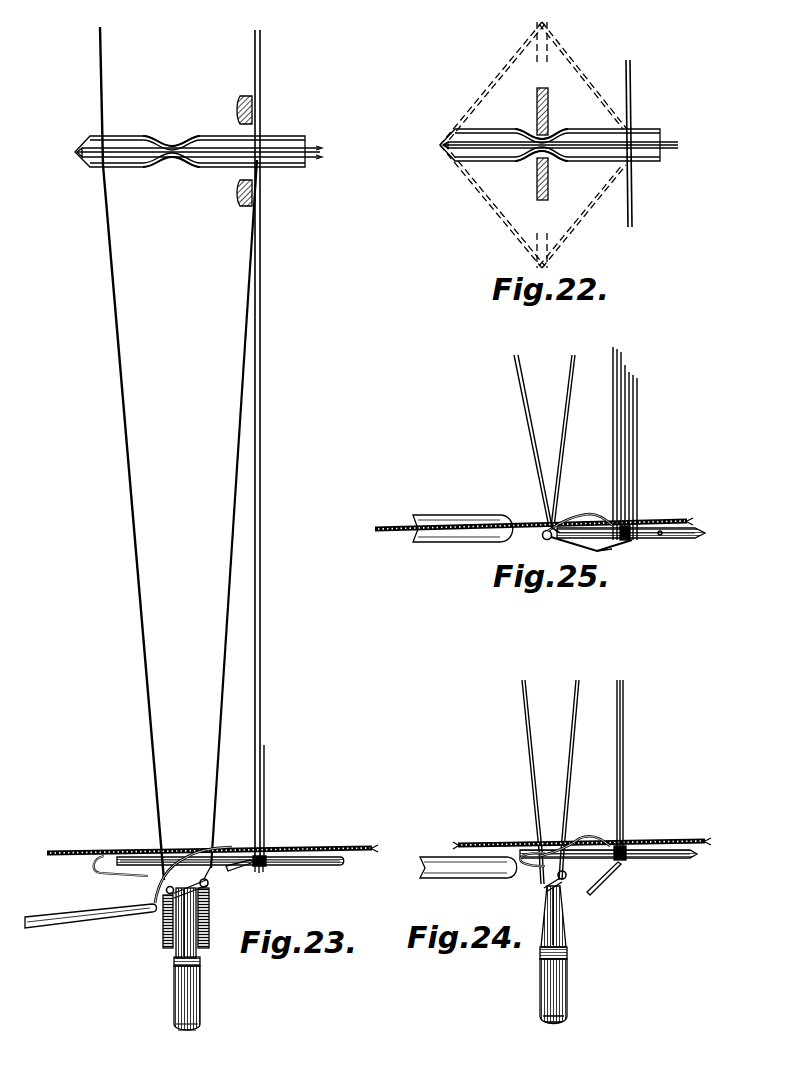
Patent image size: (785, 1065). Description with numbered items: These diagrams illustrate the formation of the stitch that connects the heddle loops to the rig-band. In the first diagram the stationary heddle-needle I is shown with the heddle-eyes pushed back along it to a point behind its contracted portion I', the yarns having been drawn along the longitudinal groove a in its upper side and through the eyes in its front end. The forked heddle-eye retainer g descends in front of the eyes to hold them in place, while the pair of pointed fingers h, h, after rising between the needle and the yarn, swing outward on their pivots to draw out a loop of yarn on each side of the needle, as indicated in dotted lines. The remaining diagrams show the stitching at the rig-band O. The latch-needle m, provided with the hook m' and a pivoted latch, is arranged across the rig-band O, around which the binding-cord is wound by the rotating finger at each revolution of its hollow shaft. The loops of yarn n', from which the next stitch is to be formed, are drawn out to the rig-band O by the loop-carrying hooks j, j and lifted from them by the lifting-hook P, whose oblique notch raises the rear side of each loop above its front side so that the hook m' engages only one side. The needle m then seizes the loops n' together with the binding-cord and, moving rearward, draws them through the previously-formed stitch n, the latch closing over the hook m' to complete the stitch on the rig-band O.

In FIG. 23, the stationary needle I is at (198, 143).
In FIG. 22, the stationary needle I is at (559, 135).
In FIG. 23, the contracted portion of needle I' is at (171, 156).
In FIG. 22, the contracted portion of needle I' is at (542, 143).
In FIG. 23, the longitudinal groove a is at (131, 158).
In FIG. 22, the longitudinal groove a is at (640, 146).
In FIG. 23, the heddle-eye retainer g is at (239, 151).
In FIG. 22, the pointed finger h is at (550, 144).
In FIG. 23, the rig-band O is at (212, 844).
In FIG. 25, the rig-band O is at (534, 519).
In FIG. 24, the rig-band O is at (582, 838).
In FIG. 23, the latch-needle m is at (230, 868).
In FIG. 25, the latch-needle m is at (631, 450).
In FIG. 24, the latch-needle m is at (608, 777).
In FIG. 23, the hook m' is at (121, 871).
In FIG. 25, the hook m' is at (585, 547).
In FIG. 24, the hook m' is at (531, 870).
In FIG. 23, the previously-formed stitch n is at (259, 870).
In FIG. 25, the previously-formed stitch n is at (625, 541).
In FIG. 24, the previously-formed stitch n is at (621, 861).
In FIG. 23, the loops of yarn n' is at (196, 882).
In FIG. 25, the loops of yarn n' is at (561, 517).
In FIG. 24, the loops of yarn n' is at (564, 881).
In FIG. 23, the loop-carrying hook j is at (184, 918).
In FIG. 23, the lifting-hook P is at (193, 959).
In FIG. 24, the lifting-hook P is at (561, 955).